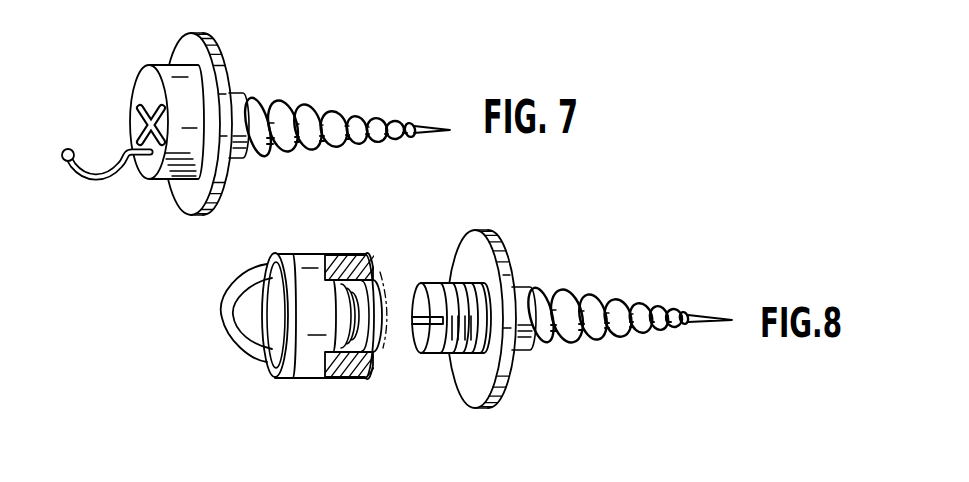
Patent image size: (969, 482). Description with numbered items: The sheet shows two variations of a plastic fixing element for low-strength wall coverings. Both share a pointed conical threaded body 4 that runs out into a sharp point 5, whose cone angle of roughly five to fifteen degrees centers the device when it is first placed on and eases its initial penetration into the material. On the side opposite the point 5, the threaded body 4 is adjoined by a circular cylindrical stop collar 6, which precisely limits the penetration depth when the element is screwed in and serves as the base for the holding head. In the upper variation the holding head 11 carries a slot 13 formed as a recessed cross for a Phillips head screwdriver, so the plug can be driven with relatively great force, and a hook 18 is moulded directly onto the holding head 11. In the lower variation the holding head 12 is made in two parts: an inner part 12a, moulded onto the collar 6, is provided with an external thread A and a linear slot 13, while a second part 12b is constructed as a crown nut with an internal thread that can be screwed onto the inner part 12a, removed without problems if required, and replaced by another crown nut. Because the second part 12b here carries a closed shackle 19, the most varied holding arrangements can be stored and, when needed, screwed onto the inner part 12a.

In FIG. 7, the threaded body 4 is at (290, 116).
In FIG. 8, the threaded body 4 is at (570, 300).
In FIG. 7, the point 5 is at (425, 127).
In FIG. 8, the point 5 is at (698, 323).
In FIG. 7, the stop collar 6 is at (226, 66).
In FIG. 8, the stop collar 6 is at (507, 262).
In FIG. 7, the holding head 11 is at (157, 56).
In FIG. 8, the holding head 12 is at (268, 239).
In FIG. 8, the inner part 12a is at (441, 358).
In FIG. 8, the second part 12b is at (320, 386).
In FIG. 7, the slot 13 is at (138, 122).
In FIG. 8, the slot 13 is at (405, 322).
In FIG. 7, the hook 18 is at (82, 186).
In FIG. 8, the closed shackle 19 is at (222, 314).
In FIG. 8, the external thread A is at (467, 281).